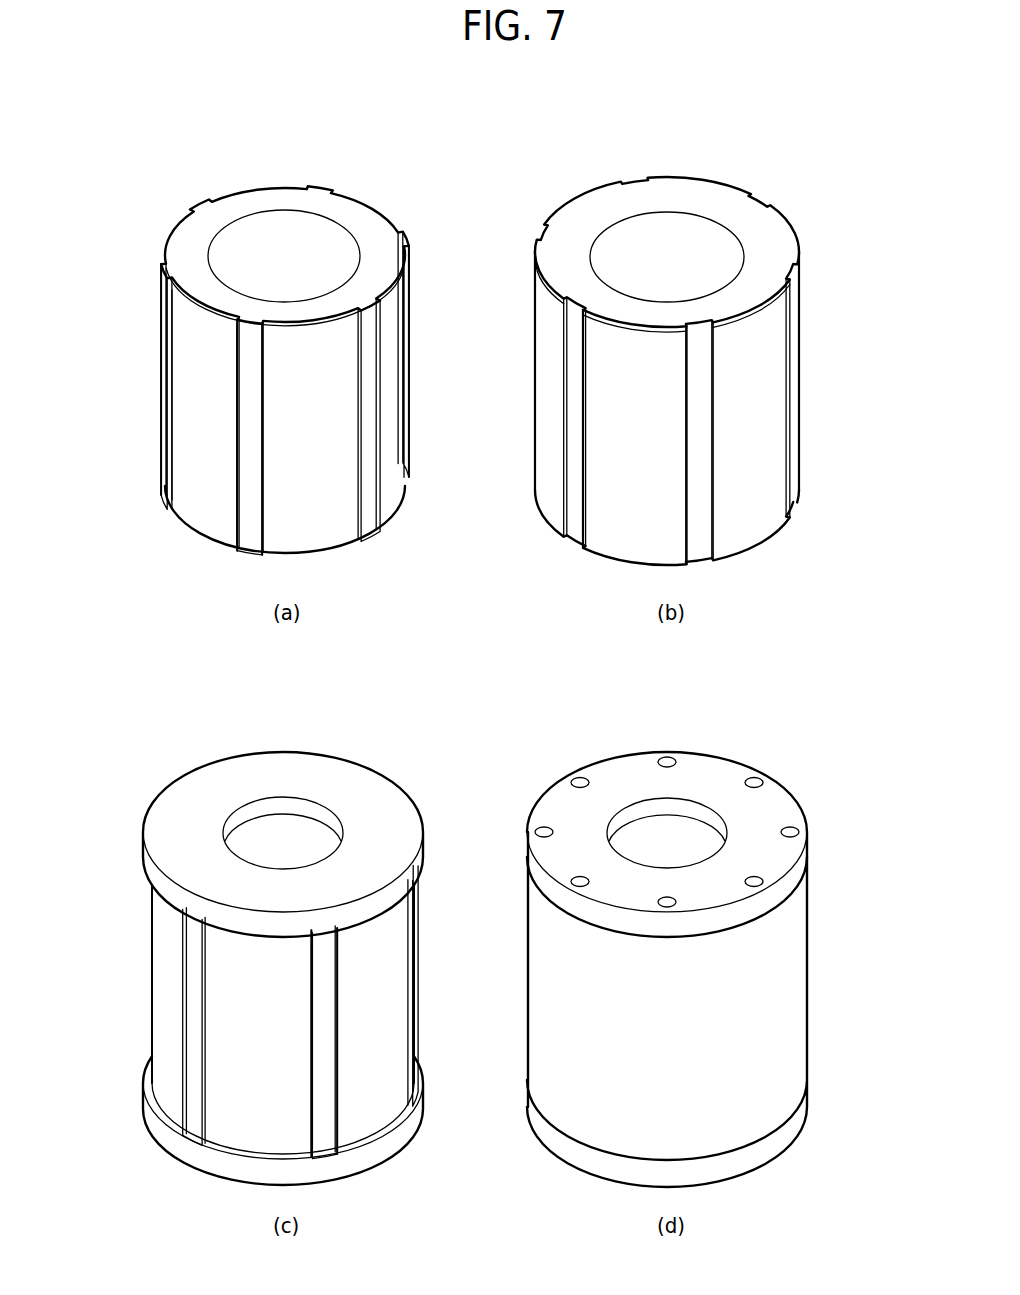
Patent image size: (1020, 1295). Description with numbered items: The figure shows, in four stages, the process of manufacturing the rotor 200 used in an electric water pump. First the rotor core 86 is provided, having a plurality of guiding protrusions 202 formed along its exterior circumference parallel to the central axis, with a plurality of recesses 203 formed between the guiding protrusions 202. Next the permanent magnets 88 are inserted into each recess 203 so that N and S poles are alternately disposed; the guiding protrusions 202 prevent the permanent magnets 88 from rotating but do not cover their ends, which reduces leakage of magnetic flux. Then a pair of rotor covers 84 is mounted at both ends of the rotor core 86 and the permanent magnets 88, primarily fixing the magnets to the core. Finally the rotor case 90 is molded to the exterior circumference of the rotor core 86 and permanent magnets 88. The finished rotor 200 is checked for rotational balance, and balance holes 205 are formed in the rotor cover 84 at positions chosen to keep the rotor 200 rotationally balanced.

The rotor cover 84 is at (305, 772).
The rotor core 86 is at (384, 203).
The permanent magnet 88 is at (385, 947).
The rotor case 90 is at (775, 968).
The rotor 200 is at (696, 916).
The guiding protrusion 202 is at (160, 280).
The recess 203 is at (195, 318).
The balance hole 205 is at (757, 780).